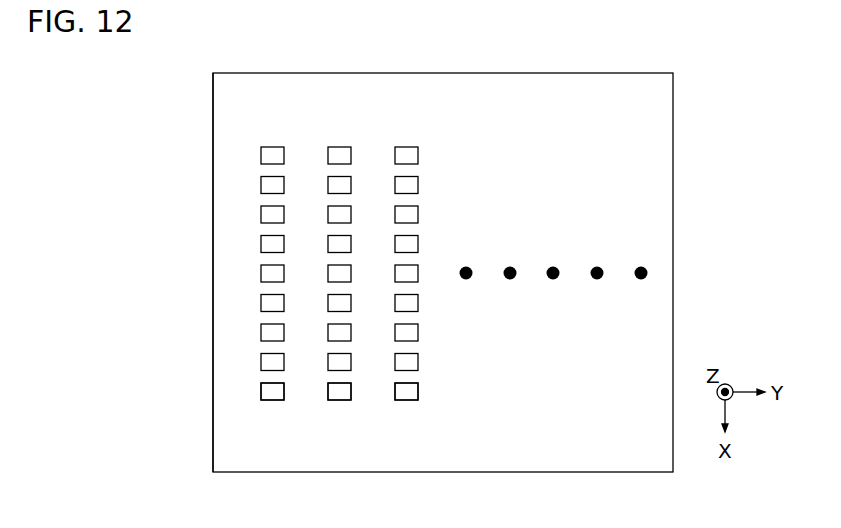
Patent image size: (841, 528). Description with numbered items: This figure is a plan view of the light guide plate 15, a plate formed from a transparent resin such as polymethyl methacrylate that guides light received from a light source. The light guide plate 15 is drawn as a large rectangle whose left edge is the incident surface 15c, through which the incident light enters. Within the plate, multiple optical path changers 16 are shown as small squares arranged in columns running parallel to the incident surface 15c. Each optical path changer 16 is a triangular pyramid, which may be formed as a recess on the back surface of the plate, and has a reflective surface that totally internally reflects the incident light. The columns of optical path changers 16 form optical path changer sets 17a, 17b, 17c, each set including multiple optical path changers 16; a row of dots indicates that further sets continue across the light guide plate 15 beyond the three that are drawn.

The light guide plate 15 is at (234, 357).
The incident surface 15c is at (213, 273).
The optical path changer 16 is at (273, 400).
The optical path changer set 17a is at (273, 142).
The optical path changer set 17b is at (340, 142).
The optical path changer set 17c is at (407, 142).